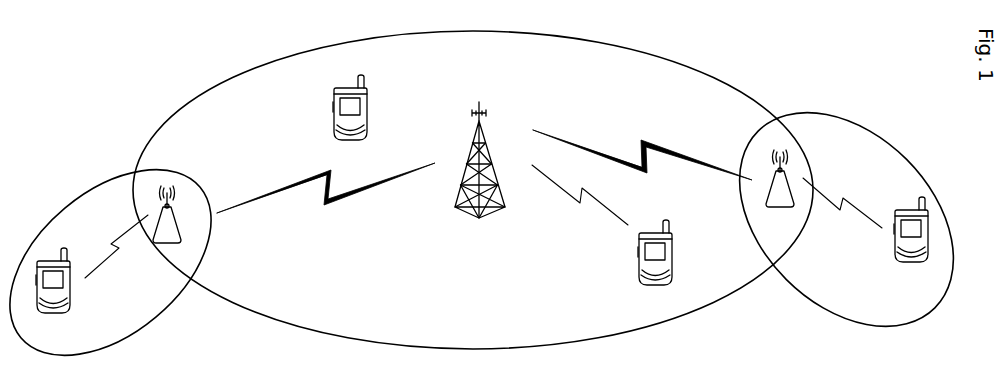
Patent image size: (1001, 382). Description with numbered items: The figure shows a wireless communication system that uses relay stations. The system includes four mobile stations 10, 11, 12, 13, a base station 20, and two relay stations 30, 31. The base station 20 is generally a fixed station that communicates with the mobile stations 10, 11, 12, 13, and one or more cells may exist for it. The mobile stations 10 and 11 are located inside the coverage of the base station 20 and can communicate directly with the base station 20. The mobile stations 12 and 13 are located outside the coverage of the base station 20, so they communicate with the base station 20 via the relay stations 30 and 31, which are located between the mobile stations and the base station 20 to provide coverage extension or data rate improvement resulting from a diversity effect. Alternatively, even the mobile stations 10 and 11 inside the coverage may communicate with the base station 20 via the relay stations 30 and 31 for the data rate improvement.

The mobile station 10 is at (334, 117).
The mobile station 11 is at (672, 250).
The mobile station 12 is at (70, 294).
The mobile station 13 is at (895, 240).
The base station 20 is at (482, 134).
The relay station 30 is at (173, 213).
The relay station 31 is at (785, 170).